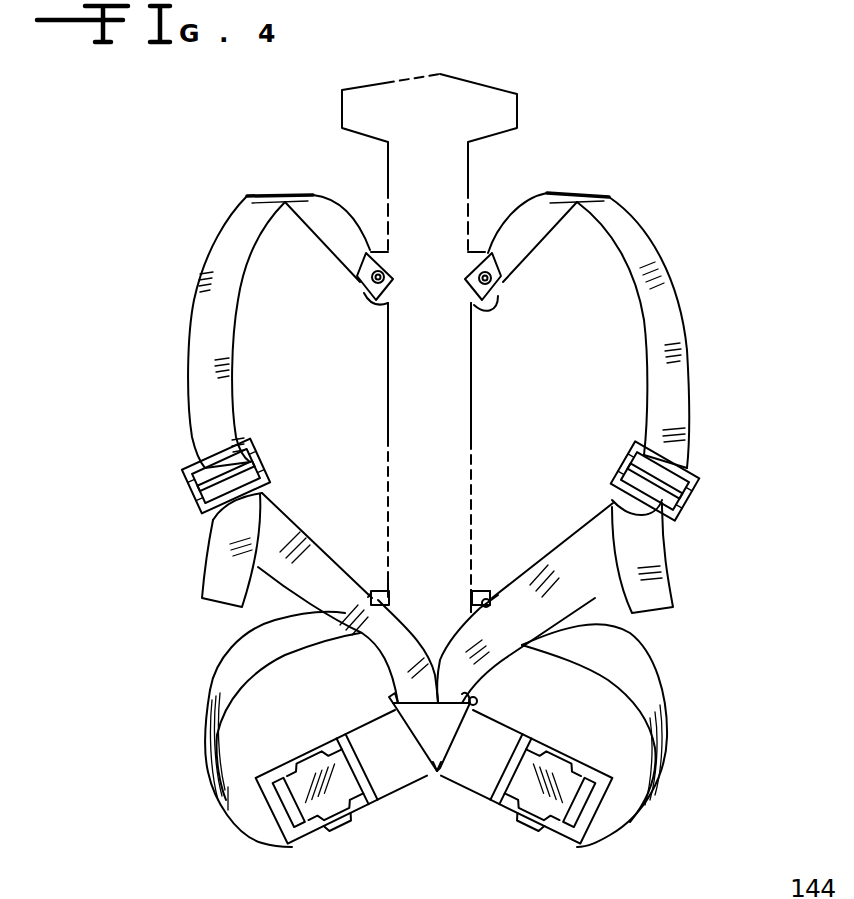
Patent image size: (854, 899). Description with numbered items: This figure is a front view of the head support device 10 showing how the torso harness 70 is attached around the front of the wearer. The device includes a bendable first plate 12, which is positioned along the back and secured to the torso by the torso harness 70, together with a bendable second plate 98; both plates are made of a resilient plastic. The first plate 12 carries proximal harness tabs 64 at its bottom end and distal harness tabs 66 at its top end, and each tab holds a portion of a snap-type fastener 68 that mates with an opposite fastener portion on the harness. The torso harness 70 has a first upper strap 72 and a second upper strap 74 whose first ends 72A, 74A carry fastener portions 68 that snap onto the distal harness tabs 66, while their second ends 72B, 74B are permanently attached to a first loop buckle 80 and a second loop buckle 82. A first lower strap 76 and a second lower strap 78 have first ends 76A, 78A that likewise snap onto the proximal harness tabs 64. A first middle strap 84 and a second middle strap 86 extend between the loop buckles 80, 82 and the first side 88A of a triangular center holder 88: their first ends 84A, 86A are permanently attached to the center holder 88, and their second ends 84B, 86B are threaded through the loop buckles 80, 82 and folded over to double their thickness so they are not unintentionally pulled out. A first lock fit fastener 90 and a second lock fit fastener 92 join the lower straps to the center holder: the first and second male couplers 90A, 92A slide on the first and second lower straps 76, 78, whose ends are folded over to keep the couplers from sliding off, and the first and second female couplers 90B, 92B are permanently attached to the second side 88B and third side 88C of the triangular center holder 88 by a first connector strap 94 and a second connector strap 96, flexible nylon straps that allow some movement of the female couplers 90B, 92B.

The head support device 10 is at (494, 71).
The first plate 12 is at (456, 372).
The proximal harness tabs 64 is at (388, 588).
The distal harness tabs 66 is at (376, 311).
The fastener 68 is at (369, 282).
The torso harness 70 is at (180, 331).
The first upper strap 72 is at (247, 196).
The first end of first upper strap 72A is at (371, 250).
The second end of first upper strap 72B is at (218, 453).
The second upper strap 74 is at (622, 207).
The first end of second upper strap 74A is at (484, 255).
The second end of second upper strap 74B is at (672, 467).
The first lower strap 76 is at (232, 680).
The first end of first lower strap 76A is at (371, 588).
The second lower strap 78 is at (633, 668).
The first end of second lower strap 78A is at (480, 600).
The first loop buckle 80 is at (190, 493).
The second loop buckle 82 is at (684, 492).
The first middle strap 84 is at (293, 575).
The first end of first middle strap 84A is at (227, 573).
The second end of first middle strap 84B is at (410, 685).
The second middle strap 86 is at (655, 566).
The first end of second middle strap 86A is at (660, 538).
The second end of second middle strap 86B is at (452, 680).
The triangular center holder 88 is at (438, 767).
The first side of triangular center holder 88A is at (462, 694).
The second side of triangular center holder 88B is at (393, 727).
The third side of triangular center holder 88C is at (478, 715).
The first lock fit fastener 90 is at (317, 820).
The first male coupler 90A is at (330, 825).
The first female coupler 90B is at (387, 818).
The second lock fit fastener 92 is at (545, 748).
The second male coupler 92A is at (527, 815).
The second female coupler 92B is at (567, 832).
The first connector strap 94 is at (340, 738).
The second connector strap 96 is at (468, 762).
The second plate 98 is at (437, 106).